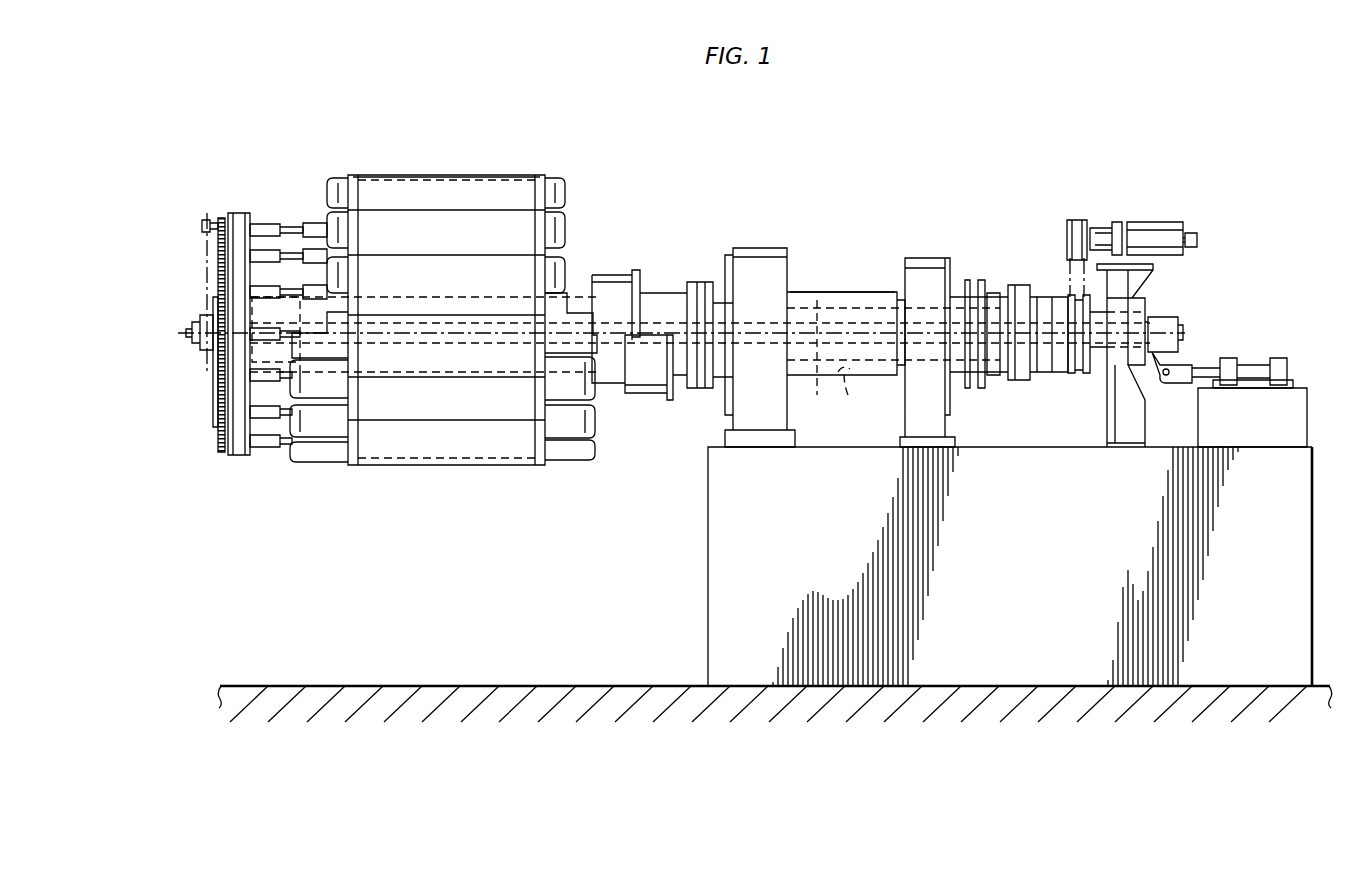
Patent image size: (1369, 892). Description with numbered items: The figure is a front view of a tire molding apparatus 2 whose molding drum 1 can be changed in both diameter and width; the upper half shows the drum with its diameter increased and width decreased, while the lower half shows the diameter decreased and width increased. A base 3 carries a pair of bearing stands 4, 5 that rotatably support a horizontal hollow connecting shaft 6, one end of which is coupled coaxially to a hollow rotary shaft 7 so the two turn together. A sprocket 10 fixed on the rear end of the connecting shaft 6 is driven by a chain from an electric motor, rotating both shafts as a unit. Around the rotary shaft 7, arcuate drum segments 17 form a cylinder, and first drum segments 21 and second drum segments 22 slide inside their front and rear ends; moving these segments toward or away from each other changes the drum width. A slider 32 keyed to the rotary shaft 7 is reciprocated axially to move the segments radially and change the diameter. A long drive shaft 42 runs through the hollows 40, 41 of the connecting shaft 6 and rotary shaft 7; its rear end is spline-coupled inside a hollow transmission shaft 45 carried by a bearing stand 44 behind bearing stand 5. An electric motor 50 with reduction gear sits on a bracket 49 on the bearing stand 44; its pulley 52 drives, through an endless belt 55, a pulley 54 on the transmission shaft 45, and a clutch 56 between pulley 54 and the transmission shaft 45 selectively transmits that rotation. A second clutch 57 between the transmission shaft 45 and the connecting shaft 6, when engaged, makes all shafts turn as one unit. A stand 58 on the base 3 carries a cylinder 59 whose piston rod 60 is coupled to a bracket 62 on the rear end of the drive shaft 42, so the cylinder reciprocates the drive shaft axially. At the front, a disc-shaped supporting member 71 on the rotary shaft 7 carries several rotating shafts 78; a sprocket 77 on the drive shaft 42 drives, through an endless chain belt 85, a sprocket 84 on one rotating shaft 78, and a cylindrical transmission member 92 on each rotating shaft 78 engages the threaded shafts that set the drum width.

The drum 1 is at (469, 176).
The tire molding apparatus 2 is at (822, 247).
The base 3 is at (708, 543).
The bearing stand 4 is at (756, 249).
The bearing stand 5 is at (926, 258).
The connecting shaft 6 is at (865, 298).
The rotary shaft 7 is at (660, 302).
The sprocket 10 is at (978, 281).
The arcuate drum segments 17 is at (454, 180).
The first drum segments 21 is at (328, 184).
The second drum segments 22 is at (565, 194).
The slider 32 is at (613, 275).
The hollow 40 is at (854, 392).
The hollow 41 is at (660, 348).
The drive shaft 42 is at (812, 358).
The bearing stand 44 is at (1115, 436).
The transmission shaft 45 is at (1094, 355).
The bracket 49 is at (1138, 292).
The electric motor 50 is at (1150, 230).
The pulley 52 is at (1080, 220).
The pulley 54 is at (1078, 380).
The endless belt 55 is at (1068, 279).
The clutch 56 is at (1050, 378).
The clutch 57 is at (1018, 381).
The stand 58 is at (1200, 426).
The cylinder 59 is at (1255, 358).
The piston rod 60 is at (1213, 358).
The bracket 62 is at (1173, 367).
The supporting member 71 is at (240, 213).
The sprocket 77 is at (197, 327).
The rotating shafts 78 is at (272, 224).
The sprocket 84 is at (204, 223).
The endless chain belt 85 is at (207, 280).
The transmission member 92 is at (311, 223).